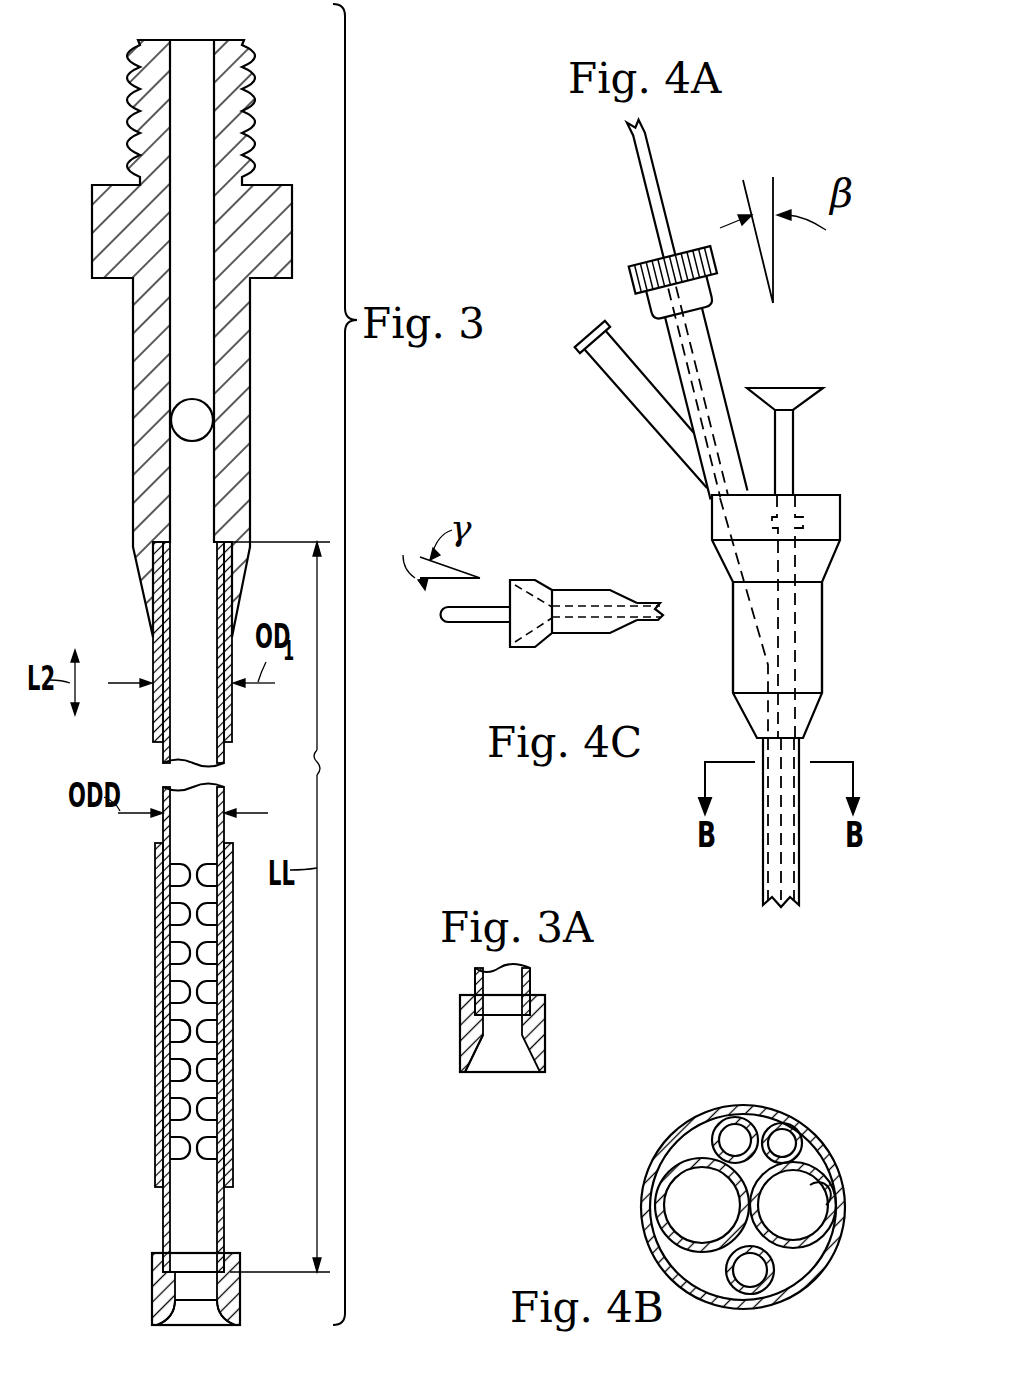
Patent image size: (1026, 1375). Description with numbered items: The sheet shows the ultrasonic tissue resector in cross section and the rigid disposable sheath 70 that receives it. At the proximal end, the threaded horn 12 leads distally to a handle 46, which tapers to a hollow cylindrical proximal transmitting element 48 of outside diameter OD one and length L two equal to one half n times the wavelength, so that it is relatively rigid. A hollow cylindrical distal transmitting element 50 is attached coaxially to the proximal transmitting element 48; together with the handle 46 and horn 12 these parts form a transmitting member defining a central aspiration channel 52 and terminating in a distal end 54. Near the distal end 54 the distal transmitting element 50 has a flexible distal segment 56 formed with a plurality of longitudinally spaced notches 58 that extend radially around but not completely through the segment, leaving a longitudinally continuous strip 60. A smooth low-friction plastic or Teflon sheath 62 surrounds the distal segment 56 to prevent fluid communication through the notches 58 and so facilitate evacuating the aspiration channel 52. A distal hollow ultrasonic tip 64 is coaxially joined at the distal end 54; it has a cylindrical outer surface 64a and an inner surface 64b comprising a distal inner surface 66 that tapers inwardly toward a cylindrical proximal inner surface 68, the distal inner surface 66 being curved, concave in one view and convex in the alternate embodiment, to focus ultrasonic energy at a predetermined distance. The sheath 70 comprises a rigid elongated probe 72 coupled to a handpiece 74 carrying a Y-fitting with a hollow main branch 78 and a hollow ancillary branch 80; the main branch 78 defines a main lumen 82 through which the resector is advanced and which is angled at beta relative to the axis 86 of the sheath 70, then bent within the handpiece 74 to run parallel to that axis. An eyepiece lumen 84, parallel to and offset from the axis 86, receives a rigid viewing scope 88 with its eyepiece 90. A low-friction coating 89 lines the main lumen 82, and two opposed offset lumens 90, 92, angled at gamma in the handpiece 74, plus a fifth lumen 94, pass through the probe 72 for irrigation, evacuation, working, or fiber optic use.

In FIG. 3, the threaded horn 12 is at (130, 108).
In FIG. 3, the handle 46 is at (140, 375).
In FIG. 3, the proximal transmitting element 48 is at (152, 667).
In FIG. 3, the distal transmitting element 50 is at (163, 758).
In FIG. 3, the central aspiration channel 52 is at (205, 748).
In FIG. 3, the distal end 54 is at (168, 1260).
In FIG. 3, the flexible distal segment 56 is at (185, 986).
In FIG. 3, the notches 58 is at (175, 1075).
In FIG. 3, the longitudinally continuous strip 60 is at (205, 1013).
In FIG. 3, the sheath 62 is at (158, 930).
In FIG. 3, the ultrasonic tip 64 is at (160, 1292).
In FIG. 3A, the ultrasonic tip 64 is at (534, 1030).
In FIG. 3, the cylindrical outer surface 64a is at (152, 1262).
In FIG. 3, the inner surface 64b is at (215, 1270).
In FIG. 3, the distal inner surface 66 is at (225, 1326).
In FIG. 3A, the distal inner surface 66 is at (480, 1040).
In FIG. 3, the cylindrical proximal inner surface 68 is at (165, 1326).
In FIG. 4A, the sheath 70 is at (848, 584).
In FIG. 4A, the probe 72 is at (765, 888).
In FIG. 4C, the probe 72 is at (645, 602).
In FIG. 4B, the probe 72 is at (657, 1152).
In FIG. 4A, the handpiece 74 is at (740, 685).
In FIG. 4C, the handpiece 74 is at (582, 592).
In FIG. 4C, the main branch 78 is at (474, 650).
In FIG. 4A, the ancillary branch 80 is at (615, 380).
In FIG. 4B, the ancillary branch 80 is at (672, 1206).
In FIG. 4A, the main lumen 82 is at (752, 620).
In FIG. 4A, the eyepiece lumen 84 is at (800, 662).
In FIG. 4B, the eyepiece lumen 84 is at (808, 1222).
In FIG. 4A, the axis 86 is at (773, 185).
In FIG. 4C, the axis 86 is at (435, 555).
In FIG. 4A, the rigid viewing scope 88 is at (793, 460).
In FIG. 4B, the low-friction coating 89 is at (825, 1195).
In FIG. 4A, the offset lumen 90 is at (800, 388).
In FIG. 4C, the offset lumen 90 is at (522, 589).
In FIG. 4B, the offset lumen 90 is at (718, 1120).
In FIG. 4C, the offset lumen 92 is at (540, 633).
In FIG. 4B, the offset lumen 92 is at (798, 1145).
In FIG. 4B, the fifth lumen 94 is at (764, 1271).